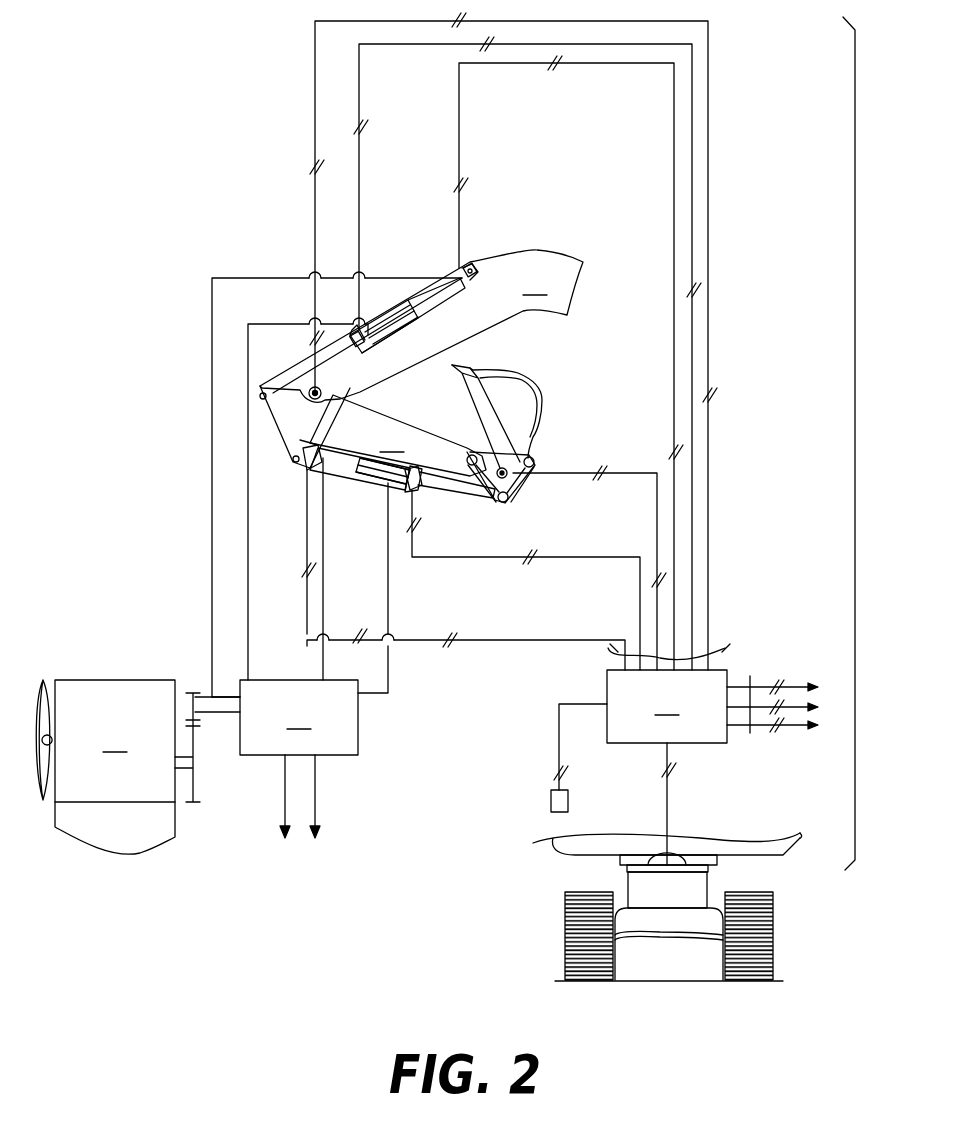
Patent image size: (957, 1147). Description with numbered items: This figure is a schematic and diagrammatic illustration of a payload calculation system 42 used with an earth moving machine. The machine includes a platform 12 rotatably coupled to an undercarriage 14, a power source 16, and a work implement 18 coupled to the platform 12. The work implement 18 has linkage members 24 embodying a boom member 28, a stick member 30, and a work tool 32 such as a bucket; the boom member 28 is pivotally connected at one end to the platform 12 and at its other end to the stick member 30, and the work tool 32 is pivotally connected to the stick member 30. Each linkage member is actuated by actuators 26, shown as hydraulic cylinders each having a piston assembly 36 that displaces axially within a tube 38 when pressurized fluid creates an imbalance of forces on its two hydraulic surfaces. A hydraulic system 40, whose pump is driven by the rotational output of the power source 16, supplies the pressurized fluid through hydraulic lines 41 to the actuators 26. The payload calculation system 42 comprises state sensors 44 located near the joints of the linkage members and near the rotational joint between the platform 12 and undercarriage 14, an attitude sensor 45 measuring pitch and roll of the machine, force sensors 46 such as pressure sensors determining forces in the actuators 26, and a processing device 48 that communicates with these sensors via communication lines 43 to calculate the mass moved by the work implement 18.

The platform 12 is at (777, 850).
The undercarriage 14 is at (658, 930).
The power source 16 is at (138, 767).
The work implement 18 is at (573, 195).
The linkage members 24 is at (556, 328).
The actuators 26 is at (430, 295).
The boom member 28 is at (421, 359).
The stick member 30 is at (422, 449).
The work tool 32 is at (530, 405).
The piston assembly 36 is at (360, 500).
The tube 38 is at (323, 485).
The hydraulic system 40 is at (303, 785).
The hydraulic lines 41 is at (248, 597).
The payload calculation system 42 is at (858, 442).
The communication lines 43 is at (748, 700).
The state sensors 44 is at (320, 400).
The attitude sensor 45 is at (562, 796).
The force sensors 46 is at (472, 285).
The processing device 48 is at (667, 706).